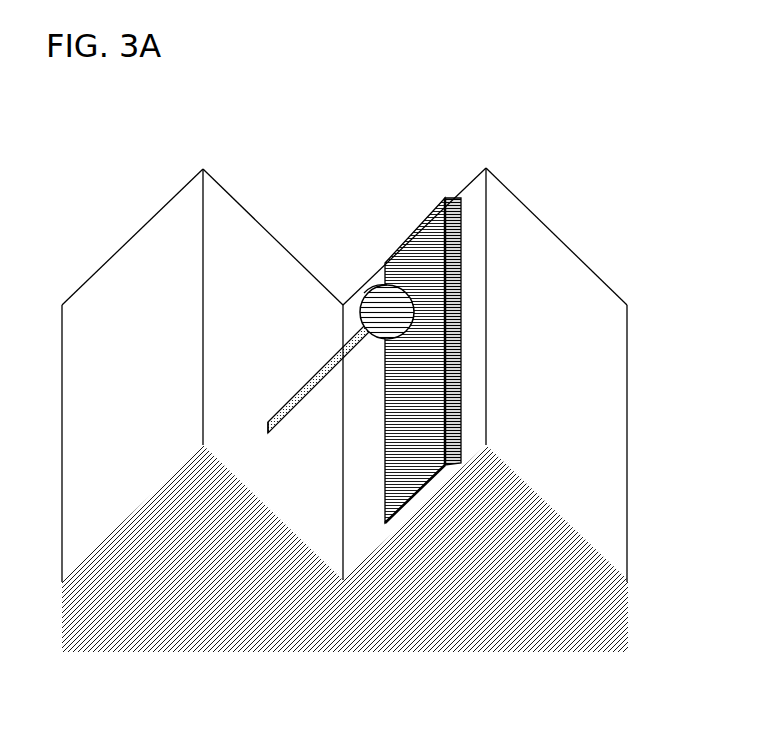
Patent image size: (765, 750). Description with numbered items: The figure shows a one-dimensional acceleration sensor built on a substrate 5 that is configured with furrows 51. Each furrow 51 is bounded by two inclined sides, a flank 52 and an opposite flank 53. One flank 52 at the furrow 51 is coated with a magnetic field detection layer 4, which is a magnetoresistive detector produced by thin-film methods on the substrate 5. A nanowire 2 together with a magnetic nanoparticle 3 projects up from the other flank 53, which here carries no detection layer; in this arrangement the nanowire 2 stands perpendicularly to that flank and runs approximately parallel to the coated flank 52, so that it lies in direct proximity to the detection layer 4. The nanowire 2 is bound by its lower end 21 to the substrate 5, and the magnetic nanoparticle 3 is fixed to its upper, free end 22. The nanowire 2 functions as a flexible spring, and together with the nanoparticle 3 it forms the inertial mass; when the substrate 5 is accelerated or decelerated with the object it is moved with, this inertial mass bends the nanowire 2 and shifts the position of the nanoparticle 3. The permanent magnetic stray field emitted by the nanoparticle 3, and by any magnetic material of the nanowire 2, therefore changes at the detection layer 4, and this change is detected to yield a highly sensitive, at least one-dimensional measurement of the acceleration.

The nanowire 2 is at (310, 380).
The end 21 is at (268, 430).
The free end 22 is at (371, 292).
The magnetic nanoparticle 3 is at (379, 298).
The magnetic field detection layer 4 is at (422, 383).
The substrate 5 is at (605, 622).
The furrow 51 is at (340, 325).
The flank 52 is at (223, 217).
The second inclined surface 53 is at (475, 192).